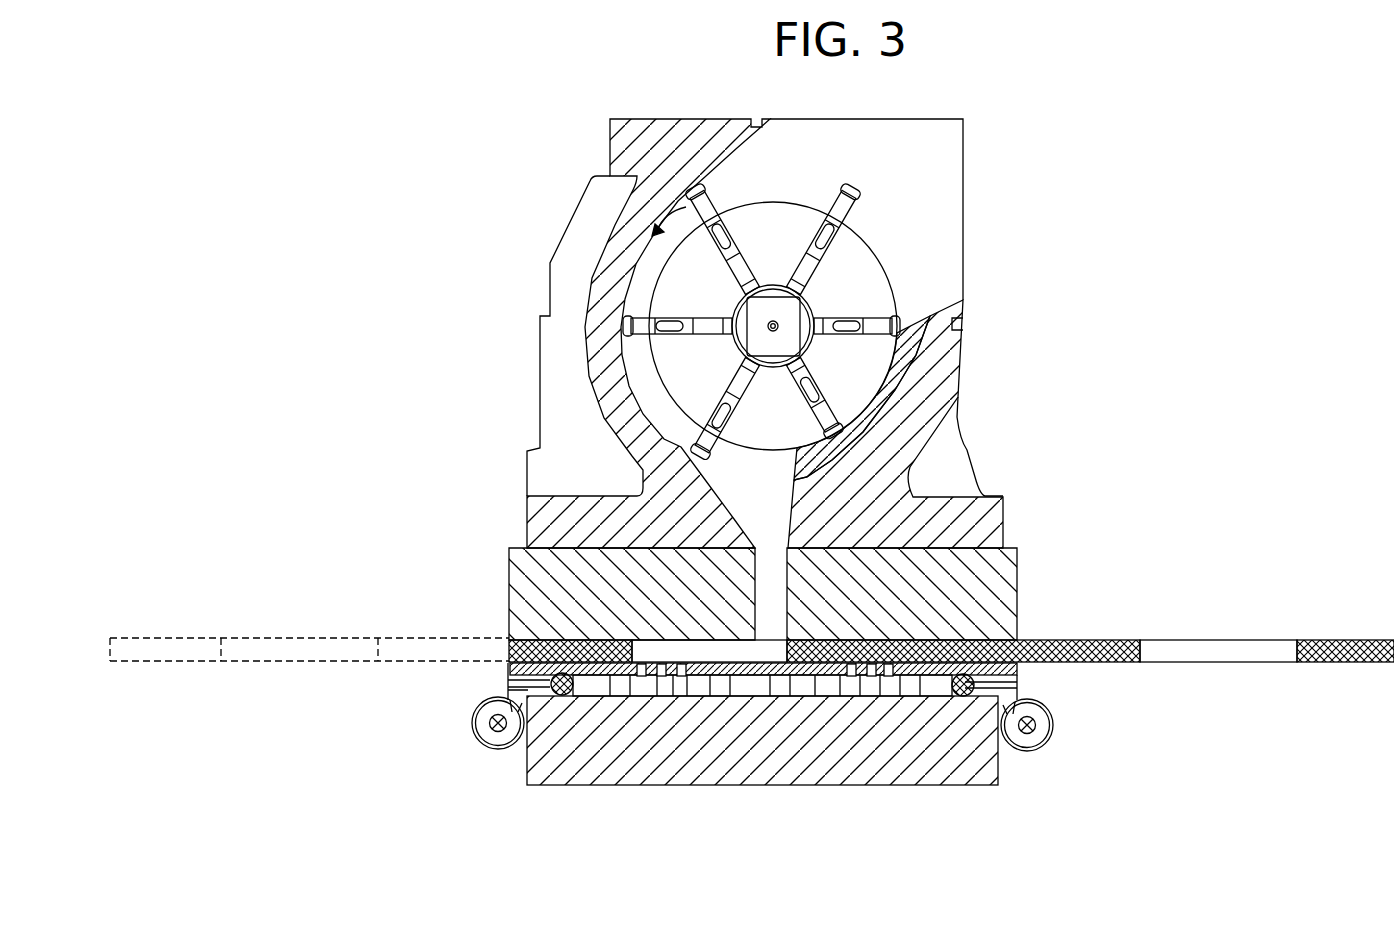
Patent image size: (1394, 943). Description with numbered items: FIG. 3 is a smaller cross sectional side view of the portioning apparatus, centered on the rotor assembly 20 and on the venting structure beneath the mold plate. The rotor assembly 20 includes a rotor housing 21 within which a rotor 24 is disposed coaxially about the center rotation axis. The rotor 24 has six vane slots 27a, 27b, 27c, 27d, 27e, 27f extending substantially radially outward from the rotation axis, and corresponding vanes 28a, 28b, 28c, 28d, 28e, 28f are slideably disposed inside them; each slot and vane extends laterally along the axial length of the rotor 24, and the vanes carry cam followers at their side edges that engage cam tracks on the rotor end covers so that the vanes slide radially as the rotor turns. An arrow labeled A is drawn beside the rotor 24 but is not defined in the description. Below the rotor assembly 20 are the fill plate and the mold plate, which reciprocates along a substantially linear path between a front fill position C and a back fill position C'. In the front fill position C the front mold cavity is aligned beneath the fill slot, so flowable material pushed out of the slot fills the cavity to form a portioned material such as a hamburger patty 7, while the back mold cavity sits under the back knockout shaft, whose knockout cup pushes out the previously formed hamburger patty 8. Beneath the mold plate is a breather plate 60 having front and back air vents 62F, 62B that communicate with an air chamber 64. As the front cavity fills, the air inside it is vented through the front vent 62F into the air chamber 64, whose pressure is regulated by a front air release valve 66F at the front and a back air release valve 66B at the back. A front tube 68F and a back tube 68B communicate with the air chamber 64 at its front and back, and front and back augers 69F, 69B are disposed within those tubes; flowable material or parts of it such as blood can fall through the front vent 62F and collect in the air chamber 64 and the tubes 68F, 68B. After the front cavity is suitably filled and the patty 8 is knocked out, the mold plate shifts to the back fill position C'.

The rotor assembly 20 is at (1050, 548).
The rotor housing 21 is at (950, 181).
The rotor 24 is at (660, 306).
The vane slot 27a is at (818, 271).
The vane slot 27b is at (746, 258).
The vane slot 27c is at (711, 319).
The vane slot 27d is at (733, 383).
The vane slot 27e is at (793, 381).
The vane slot 27f is at (827, 334).
The vane 28a is at (854, 208).
The vane 28b is at (706, 186).
The vane 28c is at (627, 350).
The vane 28d is at (712, 455).
The vane 28e is at (818, 412).
The vane 28f is at (881, 320).
The rotation direction A is at (680, 220).
The hamburger patty 8 is at (1207, 651).
The front fill position C is at (978, 676).
The back fill position C' is at (309, 673).
The breather plate 60 is at (517, 672).
The hamburger patty 7 is at (696, 690).
The front air vent 62F is at (662, 676).
The back air vent 62B is at (871, 676).
The air chamber 64 is at (752, 698).
The front air release valve 66F is at (556, 697).
The back air release valve 66B is at (970, 698).
The front tube 68F is at (483, 747).
The back tube 68B is at (1040, 748).
The front auger 69F is at (478, 721).
The back auger 69B is at (1036, 727).